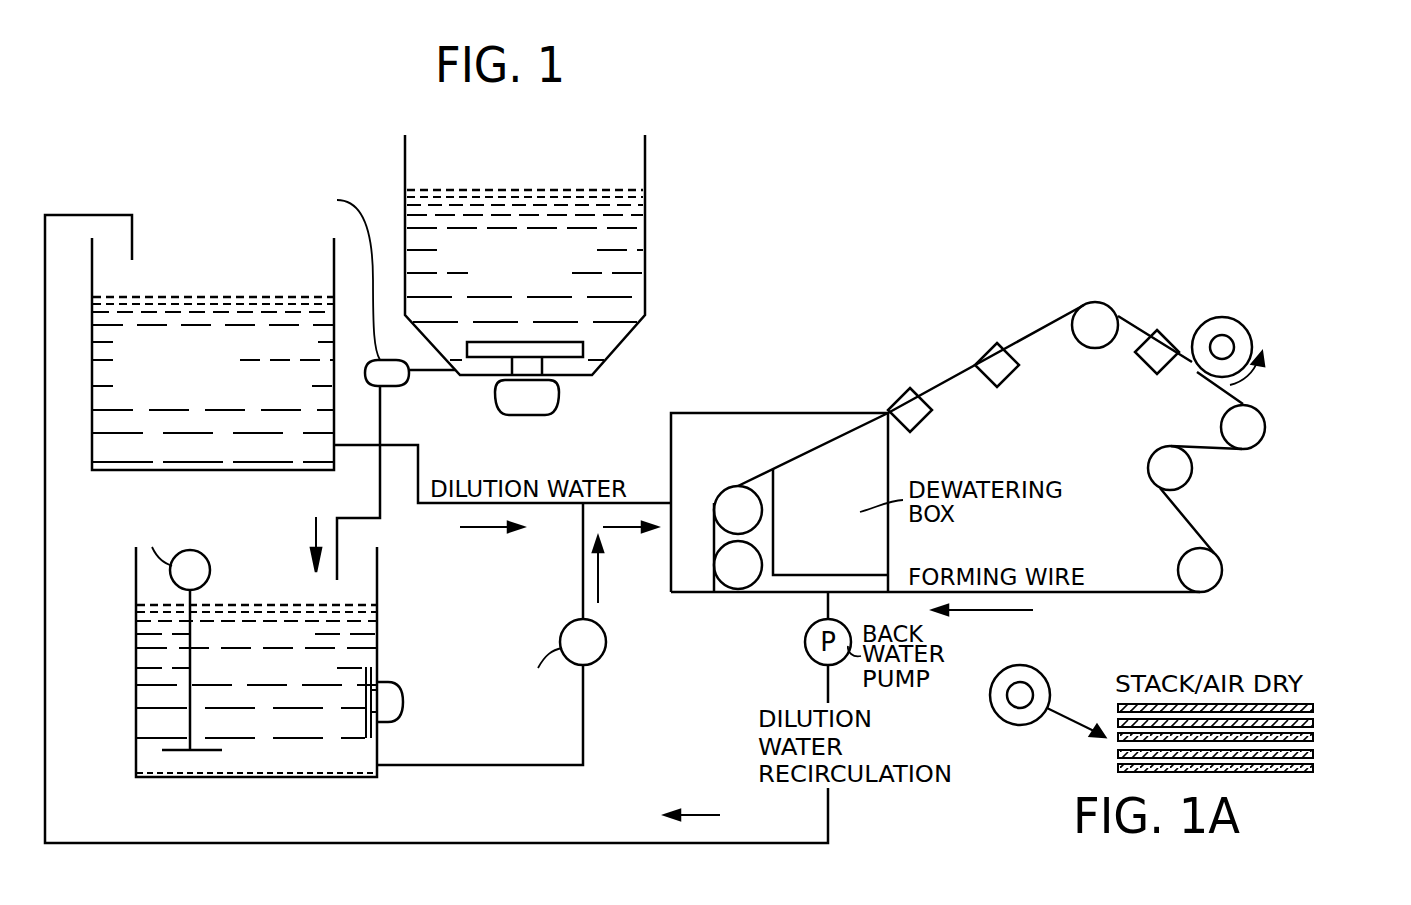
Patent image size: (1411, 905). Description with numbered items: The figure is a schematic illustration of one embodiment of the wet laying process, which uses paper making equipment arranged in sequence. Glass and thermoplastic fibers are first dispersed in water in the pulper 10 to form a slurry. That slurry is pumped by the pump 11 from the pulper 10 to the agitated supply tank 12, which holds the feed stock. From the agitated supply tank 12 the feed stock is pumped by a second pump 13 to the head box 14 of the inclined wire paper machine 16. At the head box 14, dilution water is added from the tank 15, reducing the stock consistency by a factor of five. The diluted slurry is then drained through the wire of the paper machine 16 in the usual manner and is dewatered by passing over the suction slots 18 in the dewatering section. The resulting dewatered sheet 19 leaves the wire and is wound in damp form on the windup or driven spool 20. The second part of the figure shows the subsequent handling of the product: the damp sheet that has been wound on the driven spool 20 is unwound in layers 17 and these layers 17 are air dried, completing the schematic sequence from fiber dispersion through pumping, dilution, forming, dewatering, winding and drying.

In FIG. 1, the pulper 10 is at (647, 247).
In FIG. 1, the pump 11 is at (405, 384).
In FIG. 1, the agitated supply tank 12 is at (378, 572).
In FIG. 1, the pump 13 is at (607, 637).
In FIG. 1, the head box 14 is at (693, 580).
In FIG. 1, the tank 15 is at (227, 470).
In FIG. 1, the inclined wire paper machine 16 is at (836, 390).
In FIG. 1A, the layers 17 is at (1313, 708).
In FIG. 1, the suction slots 18 is at (1013, 370).
In FIG. 1, the dewatered sheet 19 is at (1050, 320).
In FIG. 1, the driven spool 20 is at (1252, 332).
In FIG. 1A, the driven spool 20 is at (1024, 664).